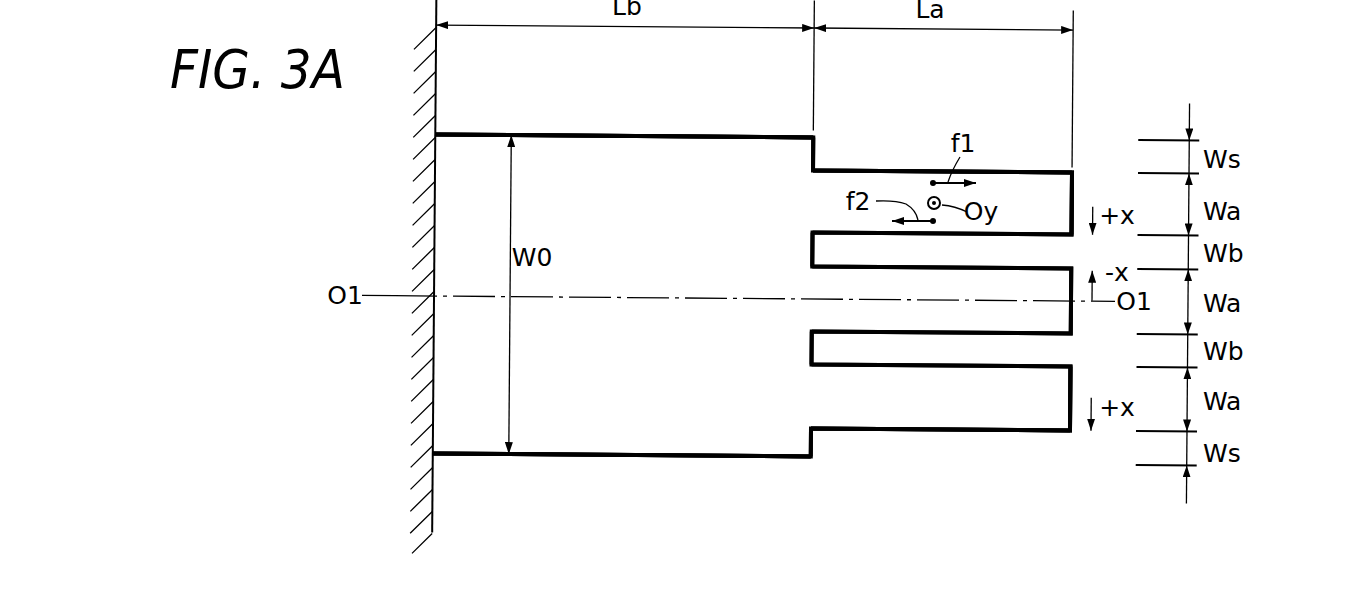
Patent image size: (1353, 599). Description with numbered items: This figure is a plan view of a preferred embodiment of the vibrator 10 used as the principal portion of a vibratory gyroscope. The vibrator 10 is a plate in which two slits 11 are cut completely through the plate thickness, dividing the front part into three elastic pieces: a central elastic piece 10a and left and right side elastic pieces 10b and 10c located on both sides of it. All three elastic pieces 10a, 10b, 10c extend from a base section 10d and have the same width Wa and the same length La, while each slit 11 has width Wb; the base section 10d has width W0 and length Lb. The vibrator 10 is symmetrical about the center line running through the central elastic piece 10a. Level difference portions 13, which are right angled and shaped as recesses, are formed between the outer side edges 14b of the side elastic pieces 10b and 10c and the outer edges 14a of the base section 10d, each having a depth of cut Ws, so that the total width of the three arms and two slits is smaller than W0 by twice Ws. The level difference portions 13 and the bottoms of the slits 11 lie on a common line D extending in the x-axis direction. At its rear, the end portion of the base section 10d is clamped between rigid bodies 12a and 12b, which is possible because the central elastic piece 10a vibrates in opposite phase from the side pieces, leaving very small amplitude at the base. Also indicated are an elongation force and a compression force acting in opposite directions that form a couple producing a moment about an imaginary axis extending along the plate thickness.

The vibrator 10 is at (838, 478).
The central elastic piece 10a is at (948, 318).
The side elastic piece 10b is at (1018, 170).
The side elastic piece 10c is at (1012, 432).
The base section 10d is at (648, 435).
The slit 11 is at (1033, 254).
The rigid body 12a is at (433, 503).
The rigid body 12b is at (434, 266).
The level difference portion 13 is at (827, 163).
The outer edge of the base section 14a is at (622, 137).
The outer side edge of the elastic piece 14b is at (905, 170).
The common line D is at (812, 252).